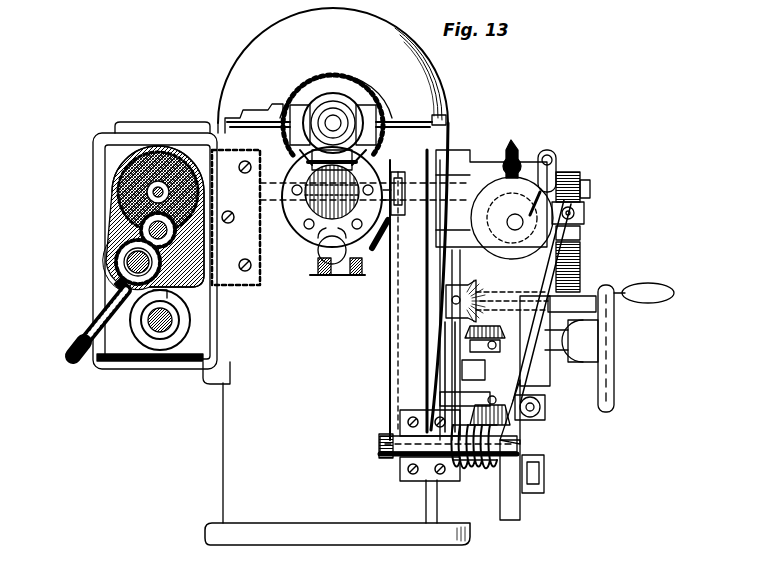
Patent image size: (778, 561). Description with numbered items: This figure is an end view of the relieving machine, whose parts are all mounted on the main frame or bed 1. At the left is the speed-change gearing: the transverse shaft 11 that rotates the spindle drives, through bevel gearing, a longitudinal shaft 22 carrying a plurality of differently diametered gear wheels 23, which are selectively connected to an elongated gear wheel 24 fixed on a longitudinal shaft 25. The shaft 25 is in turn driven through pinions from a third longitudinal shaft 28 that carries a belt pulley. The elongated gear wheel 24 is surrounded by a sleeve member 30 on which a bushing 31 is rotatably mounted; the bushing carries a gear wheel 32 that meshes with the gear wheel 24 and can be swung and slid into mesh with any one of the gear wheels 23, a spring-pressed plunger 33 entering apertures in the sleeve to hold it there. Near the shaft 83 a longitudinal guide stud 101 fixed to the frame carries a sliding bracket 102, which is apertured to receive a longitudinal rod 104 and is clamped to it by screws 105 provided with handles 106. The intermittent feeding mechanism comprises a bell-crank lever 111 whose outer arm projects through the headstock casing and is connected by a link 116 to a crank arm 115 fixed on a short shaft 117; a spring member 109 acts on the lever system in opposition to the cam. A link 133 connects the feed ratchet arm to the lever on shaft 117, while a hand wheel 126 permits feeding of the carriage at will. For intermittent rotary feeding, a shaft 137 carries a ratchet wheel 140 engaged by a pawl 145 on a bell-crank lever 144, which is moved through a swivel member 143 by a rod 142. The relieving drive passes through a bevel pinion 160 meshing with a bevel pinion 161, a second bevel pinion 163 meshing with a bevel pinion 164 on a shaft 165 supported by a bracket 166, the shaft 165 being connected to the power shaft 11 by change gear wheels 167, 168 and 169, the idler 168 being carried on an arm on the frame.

The main frame or bed 1 is at (222, 478).
The transverse shaft 11 is at (268, 182).
The longitudinal shaft 22 is at (180, 140).
The differently diametered gear wheels 23 is at (116, 183).
The elongated gear wheel 24 is at (114, 250).
The longitudinal shaft 25 is at (110, 262).
The third longitudinal shaft 28 is at (155, 348).
The sleeve member 30 is at (110, 268).
The bushing 31 is at (112, 278).
The gear wheel 32 is at (168, 240).
The spring-pressed plunger 33 is at (112, 290).
The shaft 83 is at (340, 120).
The longitudinal guide stud 101 is at (318, 243).
The bracket 102 is at (322, 254).
The longitudinal rod 104 is at (324, 258).
The screws 105 is at (360, 275).
The handles 106 is at (370, 252).
The spring member 109 is at (483, 462).
The bell-crank lever 111 is at (402, 172).
The crank arm 115 is at (400, 456).
The column 116 is at (390, 322).
The short shaft 117 is at (425, 470).
The hand wheel 126 is at (614, 370).
The link 133 is at (538, 492).
The shaft 137 is at (492, 180).
The ratchet wheel 140 is at (563, 180).
The rod 142 is at (580, 262).
The swivel member 143 is at (576, 216).
The bell-crank lever 144 is at (540, 165).
The pawl 145 is at (513, 150).
The bevel pinion 160 is at (440, 405).
The bevel pinion 161 is at (438, 395).
The second bevel pinion 163 is at (455, 332).
The bevel pinion 164 is at (450, 299).
The shaft 165 is at (470, 262).
The bracket 166 is at (598, 322).
The gear wheel 167 is at (596, 302).
The idler gear wheel 168 is at (580, 241).
The gear wheel 169 is at (584, 178).